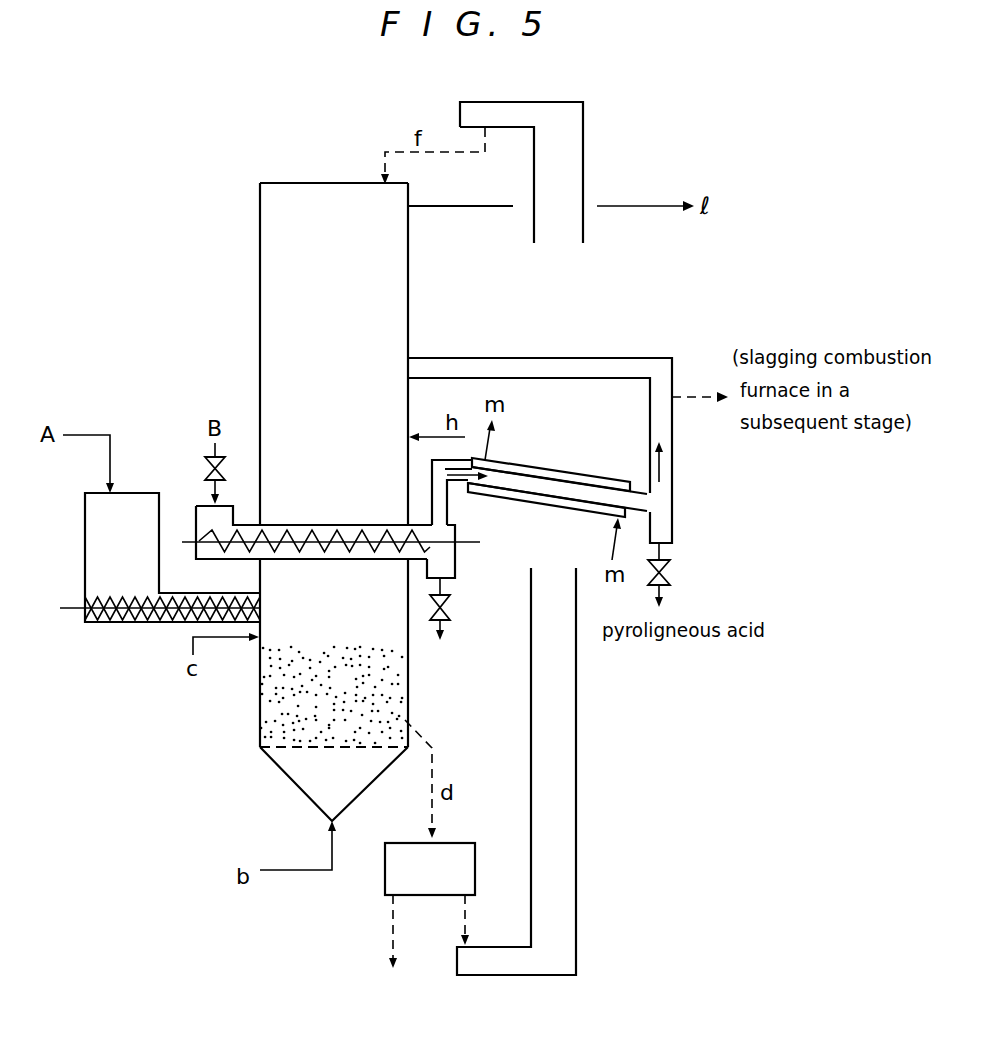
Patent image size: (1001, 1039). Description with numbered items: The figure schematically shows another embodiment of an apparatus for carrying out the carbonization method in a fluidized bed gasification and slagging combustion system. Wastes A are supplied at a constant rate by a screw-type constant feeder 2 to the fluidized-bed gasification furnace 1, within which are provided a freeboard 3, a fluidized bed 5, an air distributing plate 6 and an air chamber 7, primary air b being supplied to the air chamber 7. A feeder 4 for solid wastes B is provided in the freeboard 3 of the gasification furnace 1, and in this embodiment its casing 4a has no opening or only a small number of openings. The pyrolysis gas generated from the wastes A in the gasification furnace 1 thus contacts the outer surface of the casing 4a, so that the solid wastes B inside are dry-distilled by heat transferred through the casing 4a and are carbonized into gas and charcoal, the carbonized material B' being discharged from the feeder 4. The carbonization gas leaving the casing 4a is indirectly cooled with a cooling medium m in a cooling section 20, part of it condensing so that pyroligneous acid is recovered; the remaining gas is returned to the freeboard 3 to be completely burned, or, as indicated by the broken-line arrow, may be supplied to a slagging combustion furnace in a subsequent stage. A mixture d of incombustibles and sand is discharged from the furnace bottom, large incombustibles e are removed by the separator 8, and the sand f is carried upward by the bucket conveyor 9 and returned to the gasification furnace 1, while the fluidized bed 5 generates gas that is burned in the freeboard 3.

The fluidized-bed gasification furnace 1 is at (285, 183).
The constant feeder 2 is at (85, 540).
The freeboard 3 is at (325, 210).
The feeder 4 is at (456, 557).
The casing 4a is at (320, 523).
The fluidized bed 5 is at (395, 685).
The air distributing plate 6 is at (377, 750).
The air chamber 7 is at (294, 771).
The separator 8 is at (385, 878).
The bucket conveyor 9 is at (576, 893).
The cooling section 20 is at (553, 470).